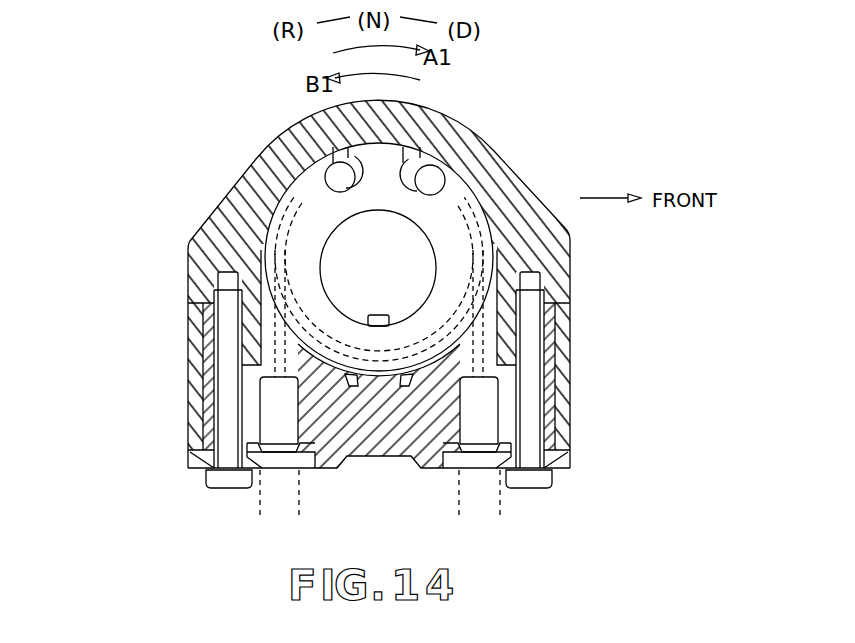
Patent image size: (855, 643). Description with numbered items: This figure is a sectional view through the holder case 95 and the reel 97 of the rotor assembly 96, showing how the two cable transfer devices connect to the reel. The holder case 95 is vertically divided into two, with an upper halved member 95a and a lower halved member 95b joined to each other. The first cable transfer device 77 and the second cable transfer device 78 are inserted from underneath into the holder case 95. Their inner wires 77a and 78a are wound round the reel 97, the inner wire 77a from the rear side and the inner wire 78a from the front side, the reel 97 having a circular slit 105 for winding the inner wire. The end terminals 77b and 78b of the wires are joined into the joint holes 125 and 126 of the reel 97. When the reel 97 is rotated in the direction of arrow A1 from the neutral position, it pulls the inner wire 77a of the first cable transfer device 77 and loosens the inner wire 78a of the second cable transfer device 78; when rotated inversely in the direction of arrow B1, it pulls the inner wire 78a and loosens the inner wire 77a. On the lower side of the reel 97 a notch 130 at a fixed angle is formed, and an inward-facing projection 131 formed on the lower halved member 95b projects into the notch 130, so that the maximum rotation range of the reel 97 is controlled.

The first cable transfer device 77 is at (264, 487).
The inner wire 77a is at (262, 262).
The end terminal 77b is at (333, 173).
The second cable transfer device 78 is at (497, 490).
The inner wire 78a is at (466, 226).
The end terminal 78b is at (432, 178).
The holder case 95 is at (313, 361).
The upper halved member 95a is at (191, 273).
The lower halved member 95b is at (104, 307).
The rotor assembly 96 is at (430, 284).
The reel 97 is at (500, 229).
The circular slit 105 is at (298, 320).
The joint hole 125 is at (338, 116).
The joint hole 126 is at (404, 146).
The notch 130 is at (322, 372).
The inward-facing projection 131 is at (372, 378).